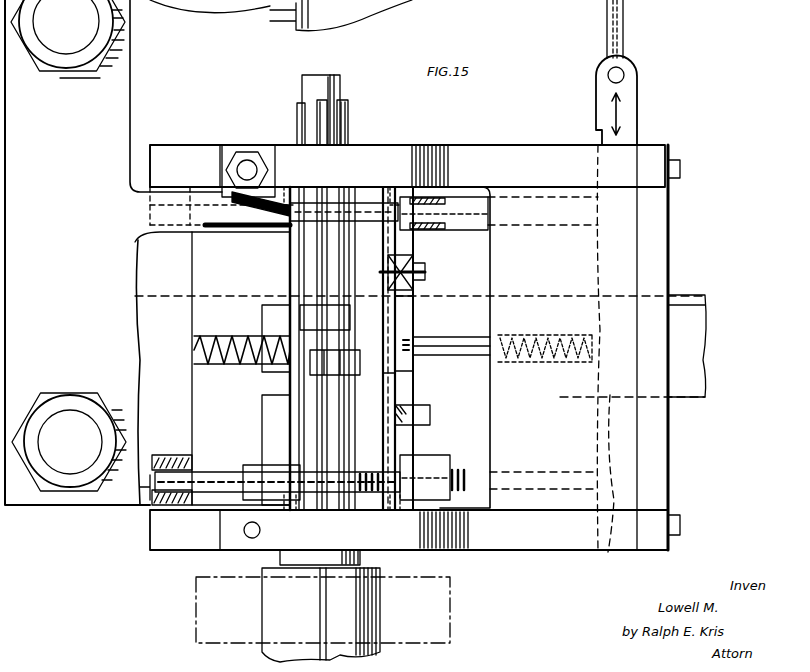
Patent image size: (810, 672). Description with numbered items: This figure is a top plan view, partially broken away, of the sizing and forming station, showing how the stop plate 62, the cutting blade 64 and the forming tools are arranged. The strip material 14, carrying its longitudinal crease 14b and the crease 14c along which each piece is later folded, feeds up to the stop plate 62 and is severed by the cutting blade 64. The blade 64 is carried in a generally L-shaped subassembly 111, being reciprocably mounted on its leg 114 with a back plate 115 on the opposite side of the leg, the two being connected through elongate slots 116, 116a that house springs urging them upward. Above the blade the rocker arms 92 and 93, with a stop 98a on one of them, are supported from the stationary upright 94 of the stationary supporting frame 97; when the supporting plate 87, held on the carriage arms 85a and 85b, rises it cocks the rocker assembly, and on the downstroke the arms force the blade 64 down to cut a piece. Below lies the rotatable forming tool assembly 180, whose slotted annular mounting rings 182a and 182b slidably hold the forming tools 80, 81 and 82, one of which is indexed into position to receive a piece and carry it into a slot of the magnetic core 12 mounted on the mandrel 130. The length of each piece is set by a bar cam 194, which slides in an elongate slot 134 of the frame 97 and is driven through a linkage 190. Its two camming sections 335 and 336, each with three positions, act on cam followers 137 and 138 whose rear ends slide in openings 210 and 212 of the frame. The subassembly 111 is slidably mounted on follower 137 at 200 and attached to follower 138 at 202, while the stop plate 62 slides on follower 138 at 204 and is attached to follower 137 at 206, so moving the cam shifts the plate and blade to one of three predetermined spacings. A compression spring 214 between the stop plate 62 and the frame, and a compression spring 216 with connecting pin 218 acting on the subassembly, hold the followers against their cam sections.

The magnetic core 12 is at (452, 600).
The strip material 14 is at (694, 376).
The crease 14b is at (688, 294).
The crease 14c is at (695, 308).
The stop plate 62 is at (296, 290).
The cutting blade 64 is at (395, 373).
The forming tool 80 is at (318, 262).
The forming tool 81 is at (346, 274).
The forming tool 82 is at (300, 278).
The arm 85a is at (77, 455).
The arm 85b is at (78, 40).
The supporting plate 87 is at (125, 110).
The rocker arm 92 is at (222, 540).
The rocker arm 93 is at (228, 146).
The stationary upright 94 is at (498, 548).
The stationary supporting frame 97 is at (498, 146).
The stop 98a is at (268, 143).
The L-shaped subassembly 111 is at (423, 323).
The leg 114 is at (382, 196).
The back plate 115 is at (408, 342).
The elongate slot 116 is at (412, 271).
The elongate slot 116a is at (410, 416).
The mandrel 130 is at (385, 654).
The elongate slot 134 is at (600, 556).
The cam follower 137 is at (350, 212).
The cam follower 138 is at (515, 468).
The forming tool assembly 180 is at (342, 286).
The slotted annular mounting ring 182a is at (262, 412).
The slotted annular mounting ring 182b is at (270, 310).
The linkage 190 is at (624, 32).
The bar cam 194 is at (637, 108).
The sliding mount 200 is at (440, 229).
The attachment 202 is at (436, 470).
The sliding mount 204 is at (240, 468).
The attachment 206 is at (260, 232).
The opening 210 is at (134, 237).
The opening 212 is at (150, 487).
The compression spring 214 is at (222, 360).
The compression spring 216 is at (530, 345).
The connecting pin 218 is at (477, 348).
The camming section 335 is at (587, 195).
The camming section 336 is at (589, 450).